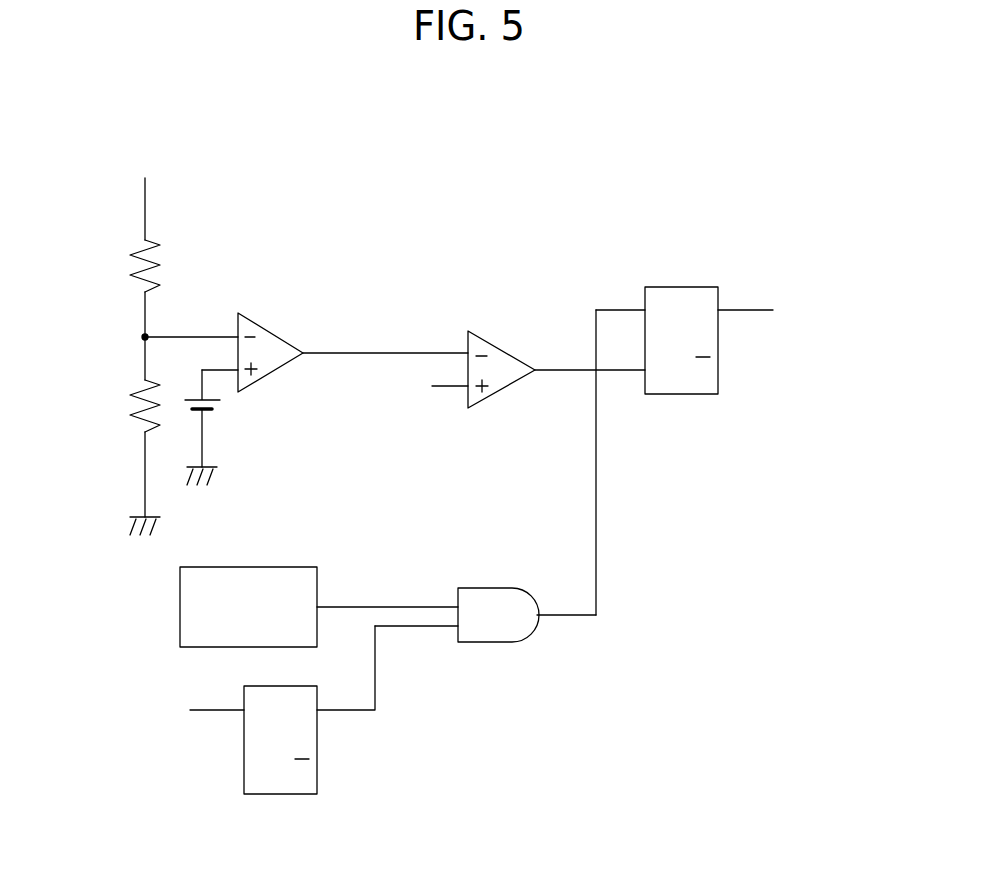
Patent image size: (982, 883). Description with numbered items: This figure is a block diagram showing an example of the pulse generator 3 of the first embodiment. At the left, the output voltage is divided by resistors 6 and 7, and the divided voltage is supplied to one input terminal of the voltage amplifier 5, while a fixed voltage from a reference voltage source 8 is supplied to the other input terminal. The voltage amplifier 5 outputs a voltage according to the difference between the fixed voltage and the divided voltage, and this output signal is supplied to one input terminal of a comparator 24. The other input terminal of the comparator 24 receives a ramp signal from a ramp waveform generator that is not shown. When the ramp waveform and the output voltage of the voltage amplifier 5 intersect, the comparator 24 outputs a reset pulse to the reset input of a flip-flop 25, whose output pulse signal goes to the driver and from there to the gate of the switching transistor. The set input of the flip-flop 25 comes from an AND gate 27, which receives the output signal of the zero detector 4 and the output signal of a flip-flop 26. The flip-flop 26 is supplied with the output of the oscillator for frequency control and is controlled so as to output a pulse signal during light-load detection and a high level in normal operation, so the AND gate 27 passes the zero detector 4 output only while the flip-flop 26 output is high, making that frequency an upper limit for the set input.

The pulse generator 3 is at (555, 110).
The zero detector 4 is at (255, 567).
The voltage amplifier 5 is at (262, 327).
The resistor 6 is at (128, 251).
The resistor 7 is at (130, 391).
The reference voltage source 8 is at (214, 409).
The comparator 24 is at (490, 343).
The flip-flop 25 is at (683, 287).
The flip-flop 26 is at (280, 794).
The AND gate 27 is at (490, 588).